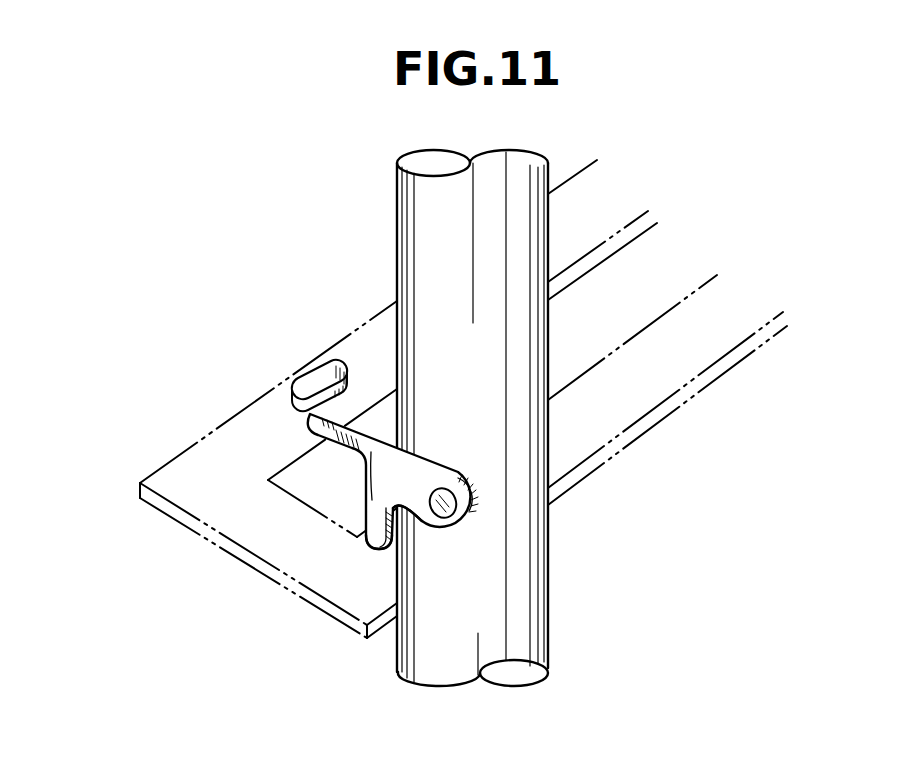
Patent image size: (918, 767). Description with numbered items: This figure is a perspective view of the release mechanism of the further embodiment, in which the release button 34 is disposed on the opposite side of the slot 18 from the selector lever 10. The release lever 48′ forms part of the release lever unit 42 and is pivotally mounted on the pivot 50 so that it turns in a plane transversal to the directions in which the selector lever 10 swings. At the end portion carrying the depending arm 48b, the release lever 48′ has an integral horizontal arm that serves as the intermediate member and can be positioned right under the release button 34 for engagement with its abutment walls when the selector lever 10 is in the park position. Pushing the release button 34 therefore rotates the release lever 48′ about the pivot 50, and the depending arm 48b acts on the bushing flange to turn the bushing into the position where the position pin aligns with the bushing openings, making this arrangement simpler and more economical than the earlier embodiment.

The selector lever 10 is at (386, 228).
The slot 18 is at (212, 500).
The release button 34 is at (313, 377).
The release lever unit 42 is at (552, 521).
The depending arm 48b is at (372, 542).
The release lever 48′ is at (450, 548).
The pivot 50 is at (452, 508).